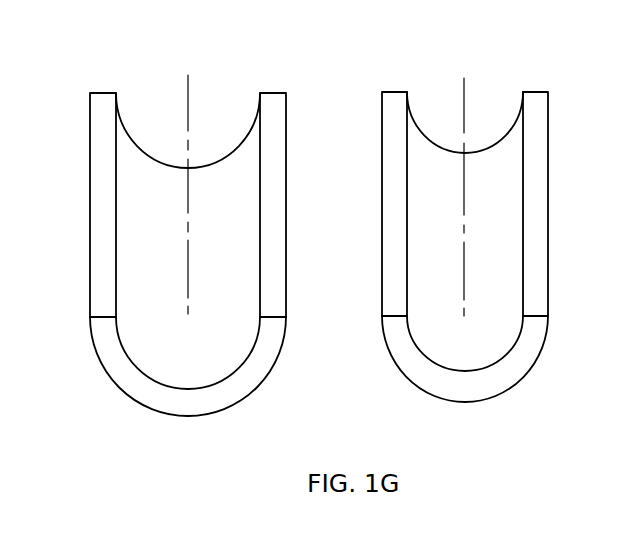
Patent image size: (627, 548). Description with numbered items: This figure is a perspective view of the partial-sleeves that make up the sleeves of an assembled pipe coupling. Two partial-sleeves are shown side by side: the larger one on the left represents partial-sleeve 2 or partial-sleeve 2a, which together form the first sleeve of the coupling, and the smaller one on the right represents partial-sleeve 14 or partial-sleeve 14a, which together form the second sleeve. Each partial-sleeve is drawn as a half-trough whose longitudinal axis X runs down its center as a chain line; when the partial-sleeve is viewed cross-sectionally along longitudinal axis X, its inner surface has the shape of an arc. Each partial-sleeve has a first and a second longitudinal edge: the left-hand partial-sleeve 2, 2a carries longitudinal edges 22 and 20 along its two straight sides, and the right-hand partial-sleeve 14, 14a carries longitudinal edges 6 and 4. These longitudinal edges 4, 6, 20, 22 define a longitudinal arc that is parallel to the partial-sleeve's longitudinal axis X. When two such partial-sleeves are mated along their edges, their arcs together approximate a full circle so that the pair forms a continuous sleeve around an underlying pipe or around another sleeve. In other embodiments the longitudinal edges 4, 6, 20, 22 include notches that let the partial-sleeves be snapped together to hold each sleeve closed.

The partial-sleeve 2 is at (209, 240).
The partial-sleeve 2a is at (209, 240).
The longitudinal edge 20 is at (273, 93).
The longitudinal edge 22 is at (103, 93).
The partial-sleeve 14 is at (497, 232).
The partial-sleeve 14a is at (497, 232).
The longitudinal edge 4 is at (540, 92).
The longitudinal edge 6 is at (392, 92).
The longitudinal axis X is at (187, 179).